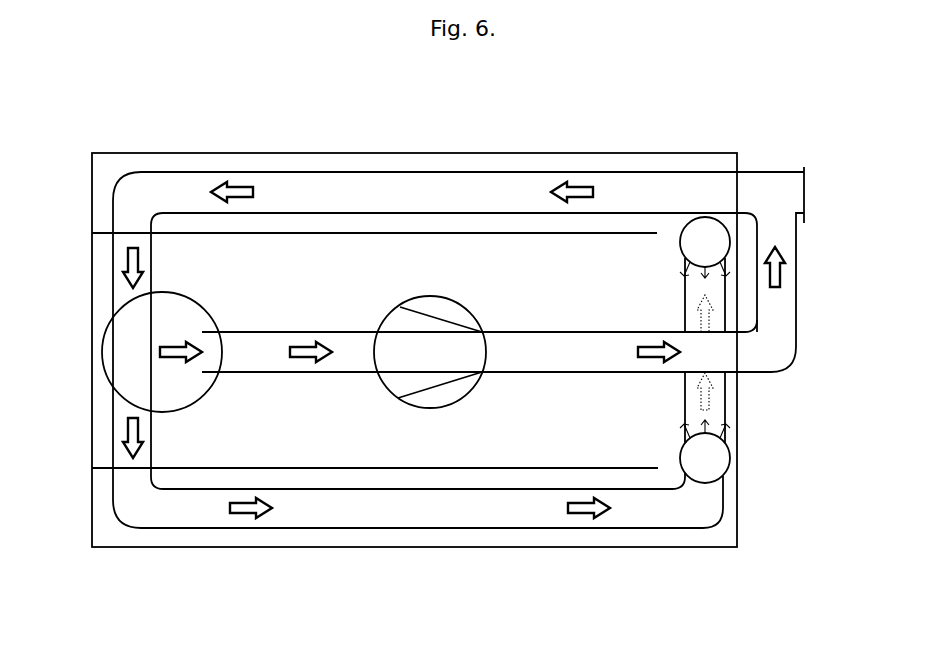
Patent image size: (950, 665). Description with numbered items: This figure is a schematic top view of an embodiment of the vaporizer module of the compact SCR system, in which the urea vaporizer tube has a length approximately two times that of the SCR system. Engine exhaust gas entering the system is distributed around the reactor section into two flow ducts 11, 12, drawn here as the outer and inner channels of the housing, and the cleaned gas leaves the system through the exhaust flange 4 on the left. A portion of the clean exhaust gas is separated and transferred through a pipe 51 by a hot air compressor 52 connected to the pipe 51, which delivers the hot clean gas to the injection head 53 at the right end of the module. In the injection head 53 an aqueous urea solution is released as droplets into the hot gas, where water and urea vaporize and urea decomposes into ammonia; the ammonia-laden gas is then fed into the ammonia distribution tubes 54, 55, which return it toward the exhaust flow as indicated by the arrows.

The exhaust flange 4 is at (168, 385).
The flow duct 11 is at (368, 547).
The flow duct 12 is at (378, 168).
The pipe 51 is at (249, 345).
The hot air compressor 52 is at (440, 305).
The injection head 53 is at (804, 195).
The ammonia distribution tube 54 is at (730, 456).
The ammonia distribution tube 55 is at (705, 225).